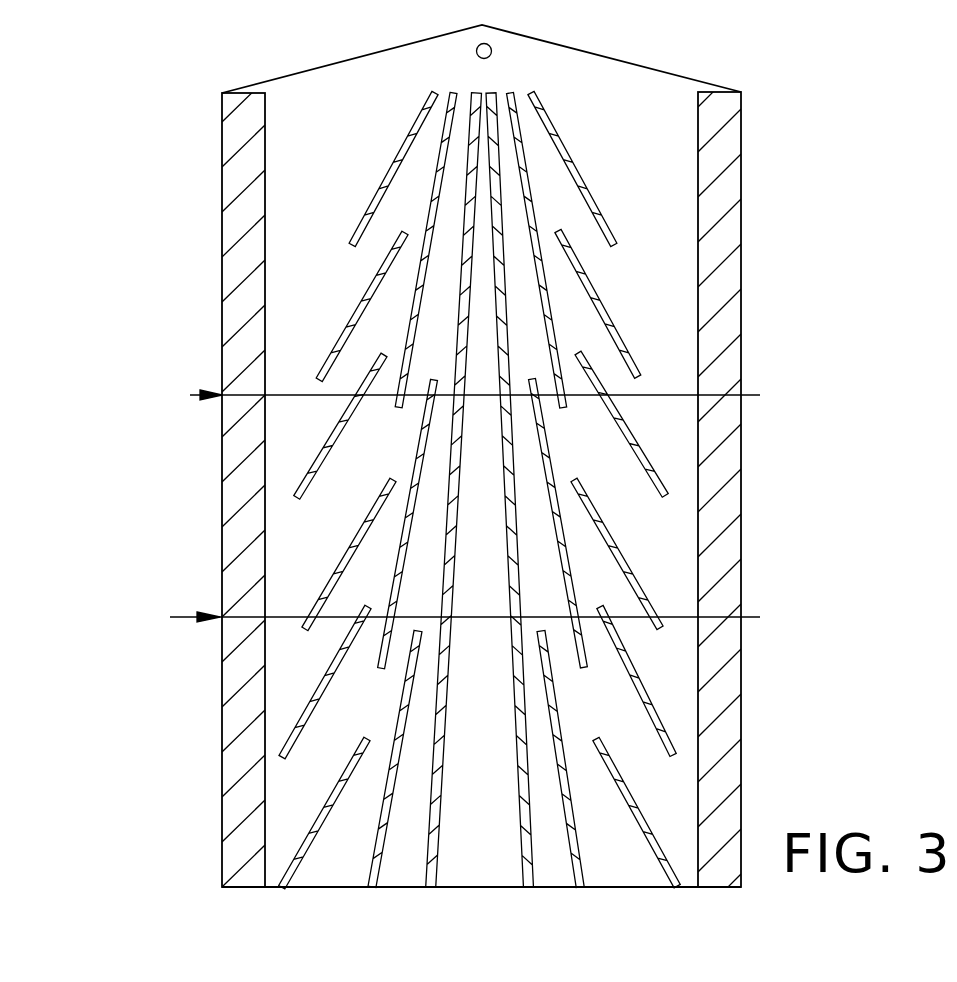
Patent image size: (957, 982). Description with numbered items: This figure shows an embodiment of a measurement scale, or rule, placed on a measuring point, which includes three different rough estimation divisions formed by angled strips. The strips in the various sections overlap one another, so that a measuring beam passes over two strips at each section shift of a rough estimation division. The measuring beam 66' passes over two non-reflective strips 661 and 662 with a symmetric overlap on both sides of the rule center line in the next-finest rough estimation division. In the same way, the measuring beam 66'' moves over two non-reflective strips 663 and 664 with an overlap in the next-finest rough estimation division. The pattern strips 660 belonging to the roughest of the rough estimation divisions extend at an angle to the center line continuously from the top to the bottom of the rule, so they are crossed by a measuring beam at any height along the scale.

The pattern strips 660 is at (437, 858).
The non-reflective strip 661 is at (402, 345).
The non-reflective strip 662 is at (447, 445).
The non-reflective strip 663 is at (323, 695).
The non-reflective strip 664 is at (351, 547).
The measuring beam 66' is at (456, 417).
The measuring beam 66'' is at (454, 599).